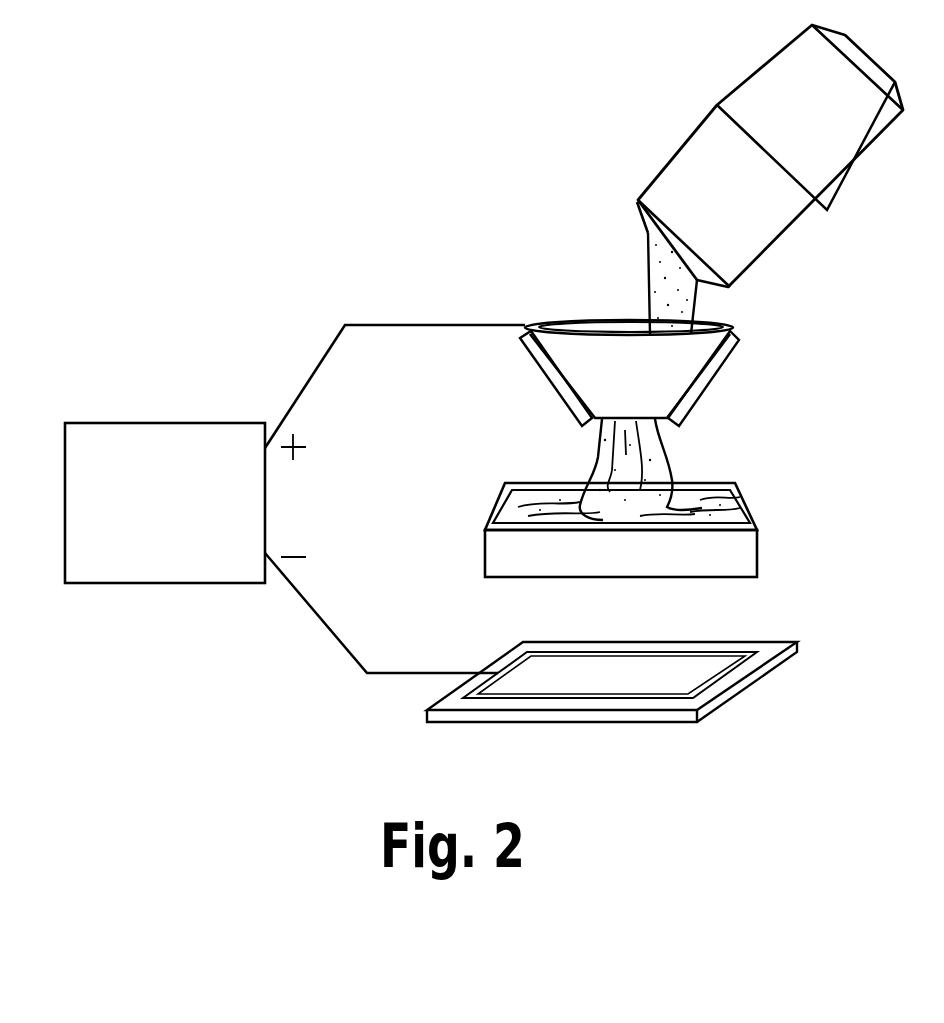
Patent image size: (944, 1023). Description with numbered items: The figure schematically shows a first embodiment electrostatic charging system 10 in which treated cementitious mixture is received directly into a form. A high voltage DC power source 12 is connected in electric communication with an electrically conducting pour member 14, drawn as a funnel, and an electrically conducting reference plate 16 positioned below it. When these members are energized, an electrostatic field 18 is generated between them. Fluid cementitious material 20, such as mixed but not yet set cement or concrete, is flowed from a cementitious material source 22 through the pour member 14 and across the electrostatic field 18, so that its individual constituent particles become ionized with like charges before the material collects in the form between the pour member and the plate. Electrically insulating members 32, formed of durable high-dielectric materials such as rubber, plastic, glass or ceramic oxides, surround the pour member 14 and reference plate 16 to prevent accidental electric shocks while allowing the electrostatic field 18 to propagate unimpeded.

The electrostatic charging system 10 is at (213, 755).
The high voltage DC power source 12 is at (90, 582).
The electrically conducting pour member 14 is at (683, 372).
The electrically conducting reference plate 16 is at (595, 692).
The electrostatic field 18 is at (803, 433).
The fluid cementitious material 20 is at (650, 285).
The cementitious material source 22 is at (683, 153).
The electrically insulating members 32 is at (690, 417).